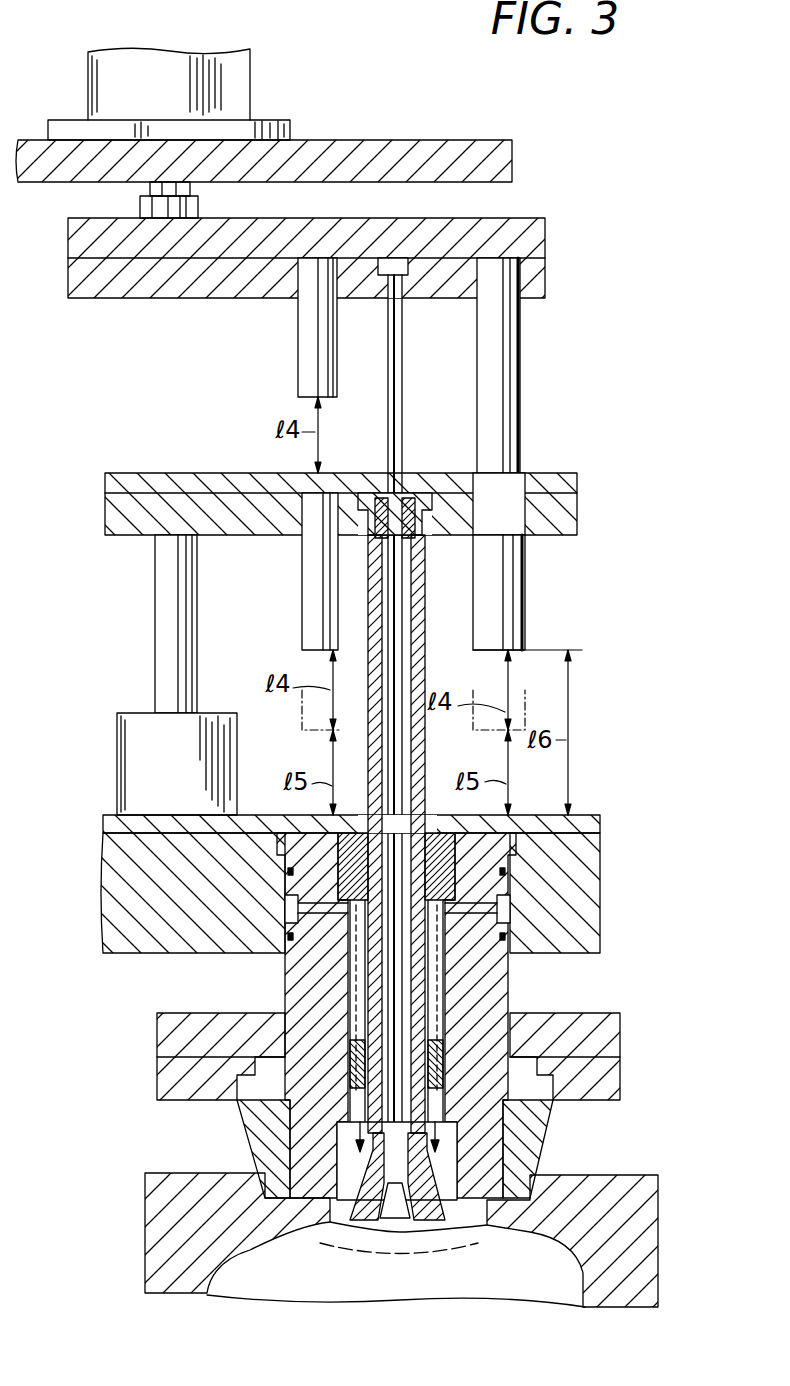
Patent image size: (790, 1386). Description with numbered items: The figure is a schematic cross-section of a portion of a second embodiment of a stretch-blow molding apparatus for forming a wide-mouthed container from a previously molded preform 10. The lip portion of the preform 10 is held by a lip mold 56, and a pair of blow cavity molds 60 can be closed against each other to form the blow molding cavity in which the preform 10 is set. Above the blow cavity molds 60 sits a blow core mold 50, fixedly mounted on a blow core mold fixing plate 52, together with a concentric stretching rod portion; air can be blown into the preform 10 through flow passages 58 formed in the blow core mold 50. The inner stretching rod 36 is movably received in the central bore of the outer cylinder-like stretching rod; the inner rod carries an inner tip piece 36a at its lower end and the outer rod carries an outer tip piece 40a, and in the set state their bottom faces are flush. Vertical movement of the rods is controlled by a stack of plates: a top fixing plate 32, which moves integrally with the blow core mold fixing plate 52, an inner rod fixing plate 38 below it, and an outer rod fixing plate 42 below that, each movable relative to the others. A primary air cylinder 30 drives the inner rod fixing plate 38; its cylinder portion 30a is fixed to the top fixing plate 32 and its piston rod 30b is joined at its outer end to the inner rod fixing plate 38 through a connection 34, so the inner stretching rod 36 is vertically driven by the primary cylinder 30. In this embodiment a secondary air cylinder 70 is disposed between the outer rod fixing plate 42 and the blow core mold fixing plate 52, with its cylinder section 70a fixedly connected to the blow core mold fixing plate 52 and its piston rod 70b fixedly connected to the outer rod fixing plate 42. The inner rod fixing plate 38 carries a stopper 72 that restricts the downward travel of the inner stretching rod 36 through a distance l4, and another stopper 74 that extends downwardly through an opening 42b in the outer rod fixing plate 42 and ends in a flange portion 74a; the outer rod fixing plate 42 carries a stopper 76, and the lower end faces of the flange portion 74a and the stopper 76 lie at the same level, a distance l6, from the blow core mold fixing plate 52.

The preform 10 is at (488, 1245).
The primary air cylinder 30 is at (194, 126).
The cylinder portion 30a is at (240, 66).
The piston rod 30b is at (192, 190).
The top fixing plate 32 is at (508, 156).
The connection 34 is at (140, 207).
The inner stretching rod 36 is at (388, 425).
The inner tip piece 36a is at (397, 1222).
The inner rod fixing plate 38 is at (525, 238).
The outer tip piece 40a is at (352, 1240).
The outer rod fixing plate 42 is at (365, 479).
The opening 42b is at (492, 490).
The blow core mold 50 is at (285, 990).
The blow core mold fixing plate 52 is at (572, 887).
The lip mold 56 is at (532, 1142).
The flow passages 58 is at (468, 912).
The blow cavity molds 60 is at (172, 1240).
The secondary air cylinder 70 is at (161, 675).
The cylinder section 70a is at (128, 732).
The piston rod 70b is at (155, 596).
The stopper 72 is at (298, 350).
The stopper 74 is at (500, 396).
The flange portion 74a is at (503, 608).
The stopper 76 is at (302, 597).